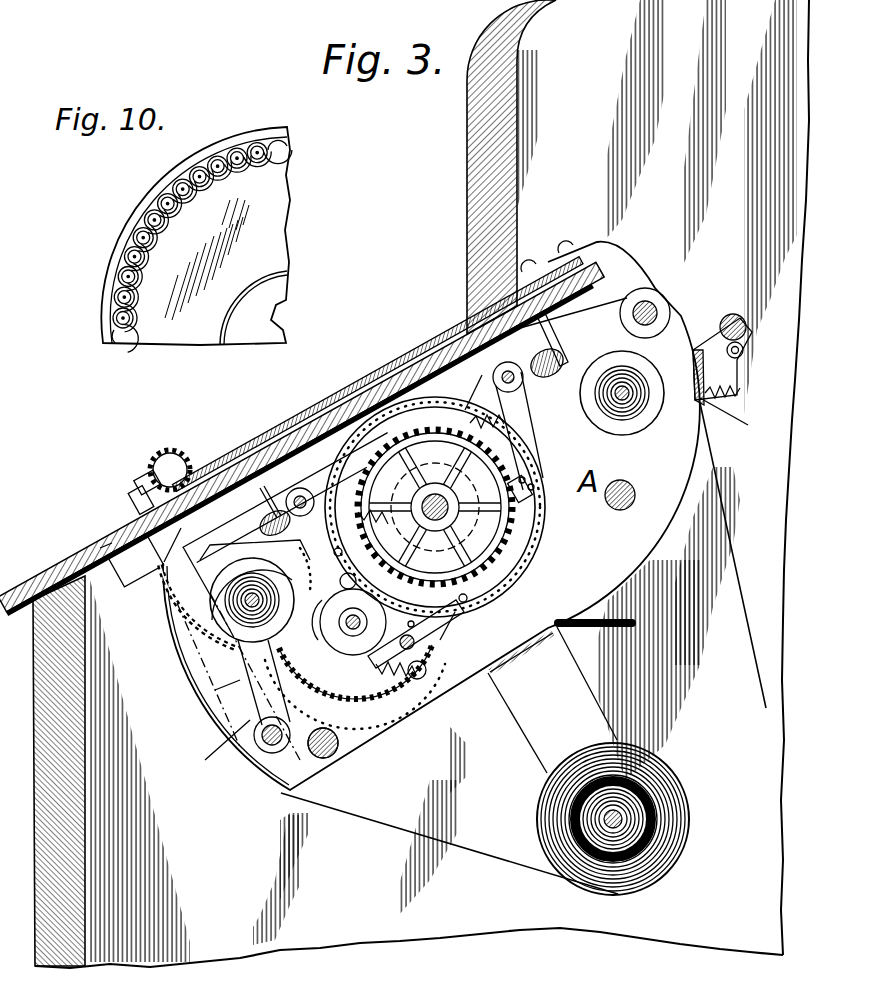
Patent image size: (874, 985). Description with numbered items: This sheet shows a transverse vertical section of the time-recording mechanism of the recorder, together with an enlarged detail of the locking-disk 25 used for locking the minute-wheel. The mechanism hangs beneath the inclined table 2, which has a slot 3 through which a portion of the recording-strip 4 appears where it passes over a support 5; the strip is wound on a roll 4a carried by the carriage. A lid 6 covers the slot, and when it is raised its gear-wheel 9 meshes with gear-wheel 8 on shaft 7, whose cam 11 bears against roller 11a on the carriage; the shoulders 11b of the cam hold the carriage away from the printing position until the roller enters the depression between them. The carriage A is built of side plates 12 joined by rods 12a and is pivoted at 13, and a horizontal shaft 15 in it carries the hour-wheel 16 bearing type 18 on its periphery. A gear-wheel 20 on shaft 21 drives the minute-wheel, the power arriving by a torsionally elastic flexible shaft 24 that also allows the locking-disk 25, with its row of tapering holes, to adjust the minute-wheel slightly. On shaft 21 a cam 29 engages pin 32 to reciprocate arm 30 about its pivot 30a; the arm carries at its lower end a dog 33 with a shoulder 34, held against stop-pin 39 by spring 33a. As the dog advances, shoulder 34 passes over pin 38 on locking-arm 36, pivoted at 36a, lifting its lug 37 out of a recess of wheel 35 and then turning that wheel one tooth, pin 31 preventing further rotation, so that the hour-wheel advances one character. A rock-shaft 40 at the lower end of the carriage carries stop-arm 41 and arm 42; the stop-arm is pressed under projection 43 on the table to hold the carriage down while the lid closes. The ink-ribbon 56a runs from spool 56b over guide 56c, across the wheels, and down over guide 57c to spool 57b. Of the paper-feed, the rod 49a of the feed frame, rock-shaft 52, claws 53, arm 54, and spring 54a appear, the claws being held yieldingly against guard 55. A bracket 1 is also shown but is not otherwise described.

In FIG. 3, the bracket 1 is at (179, 474).
In FIG. 3, the table 2 is at (98, 535).
In FIG. 3, the slot 3 is at (372, 382).
In FIG. 3, the recording-strip 4 is at (760, 522).
In FIG. 3, the roll 4a is at (692, 830).
In FIG. 3, the support 5 is at (290, 499).
In FIG. 3, the lid 6 is at (283, 432).
In FIG. 3, the shaft 7 is at (197, 606).
In FIG. 3, the gear-wheel 8 is at (238, 676).
In FIG. 3, the gear-wheel 9 is at (186, 447).
In FIG. 3, the cam 11 is at (255, 578).
In FIG. 3, the roller 11a is at (292, 722).
In FIG. 3, the shoulders 11b is at (289, 568).
In FIG. 3, the side plates 12 is at (620, 509).
In FIG. 3, the rods 12a is at (545, 378).
In FIG. 3, the pivot 13 is at (650, 305).
In FIG. 3, the horizontal shaft 15 is at (448, 505).
In FIG. 3, the hour-wheel 16 is at (478, 382).
In FIG. 3, the type 18 is at (440, 402).
In FIG. 3, the gear-wheel 20 is at (338, 750).
In FIG. 3, the shaft 21 is at (388, 678).
In FIG. 3, the flexible shaft 24 is at (620, 617).
In FIG. 10, the locking-disk 25 is at (283, 196).
In FIG. 3, the locking-disk 25 is at (355, 696).
In FIG. 3, the cam 29 is at (353, 624).
In FIG. 3, the reciprocating arm 30 is at (333, 553).
In FIG. 3, the pivot 30a is at (297, 493).
In FIG. 3, the pin 31 is at (341, 574).
In FIG. 3, the pin 32 is at (330, 615).
In FIG. 3, the dog 33 is at (430, 636).
In FIG. 3, the spring 33a is at (440, 665).
In FIG. 3, the shoulder 34 is at (467, 626).
In FIG. 3, the wheel 35 is at (435, 496).
In FIG. 3, the locking-arm 36 is at (530, 428).
In FIG. 3, the pivot 36a is at (508, 370).
In FIG. 3, the lug 37 is at (532, 495).
In FIG. 3, the pin 38 is at (468, 599).
In FIG. 3, the stop-pin 39 is at (407, 624).
In FIG. 3, the rock-shaft 40 is at (280, 748).
In FIG. 3, the stop-arm 41 is at (224, 699).
In FIG. 3, the arm 42 is at (226, 744).
In FIG. 3, the projection 43 is at (135, 560).
In FIG. 3, the rod 49a is at (730, 313).
In FIG. 3, the rock-shaft 52 is at (743, 352).
In FIG. 3, the claws 53 is at (715, 345).
In FIG. 3, the arm 54 is at (742, 390).
In FIG. 3, the spring 54a is at (742, 416).
In FIG. 3, the guard 55 is at (698, 372).
In FIG. 3, the ink-ribbon 56a is at (281, 501).
In FIG. 3, the spool 56b is at (252, 600).
In FIG. 3, the guide 56c is at (206, 580).
In FIG. 3, the spool 57b is at (622, 396).
In FIG. 3, the guide 57c is at (568, 322).